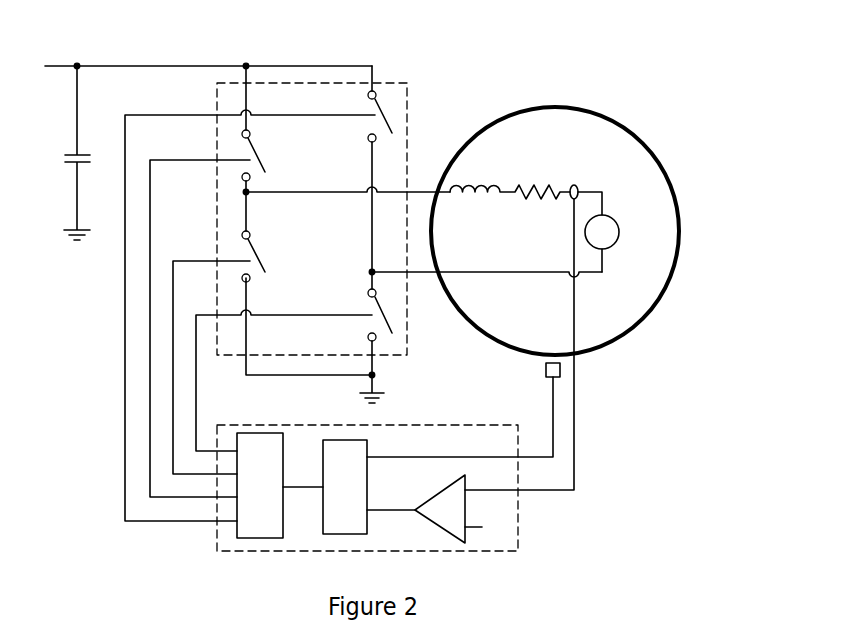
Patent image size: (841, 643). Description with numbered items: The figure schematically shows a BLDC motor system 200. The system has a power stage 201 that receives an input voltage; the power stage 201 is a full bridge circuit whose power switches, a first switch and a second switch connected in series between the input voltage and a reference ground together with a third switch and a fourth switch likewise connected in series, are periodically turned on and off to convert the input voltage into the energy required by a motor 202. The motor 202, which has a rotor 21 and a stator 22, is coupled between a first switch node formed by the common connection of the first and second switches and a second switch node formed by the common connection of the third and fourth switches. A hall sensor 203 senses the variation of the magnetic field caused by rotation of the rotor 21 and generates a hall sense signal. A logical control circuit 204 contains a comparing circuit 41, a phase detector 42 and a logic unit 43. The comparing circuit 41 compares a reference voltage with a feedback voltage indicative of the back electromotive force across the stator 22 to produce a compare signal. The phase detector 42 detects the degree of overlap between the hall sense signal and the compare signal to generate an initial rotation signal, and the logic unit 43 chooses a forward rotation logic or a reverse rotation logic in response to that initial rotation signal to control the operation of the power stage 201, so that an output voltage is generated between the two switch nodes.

The BLDC motor system 200 is at (650, 70).
The power stage 201 is at (413, 100).
The motor 202 is at (635, 175).
The hall sensor 203 is at (529, 373).
The logical control circuit 204 is at (435, 408).
The rotor 21 is at (555, 216).
The stator 22 is at (510, 208).
The comparing circuit 41 is at (440, 509).
The phase detector 42 is at (345, 487).
The logic unit 43 is at (260, 485).